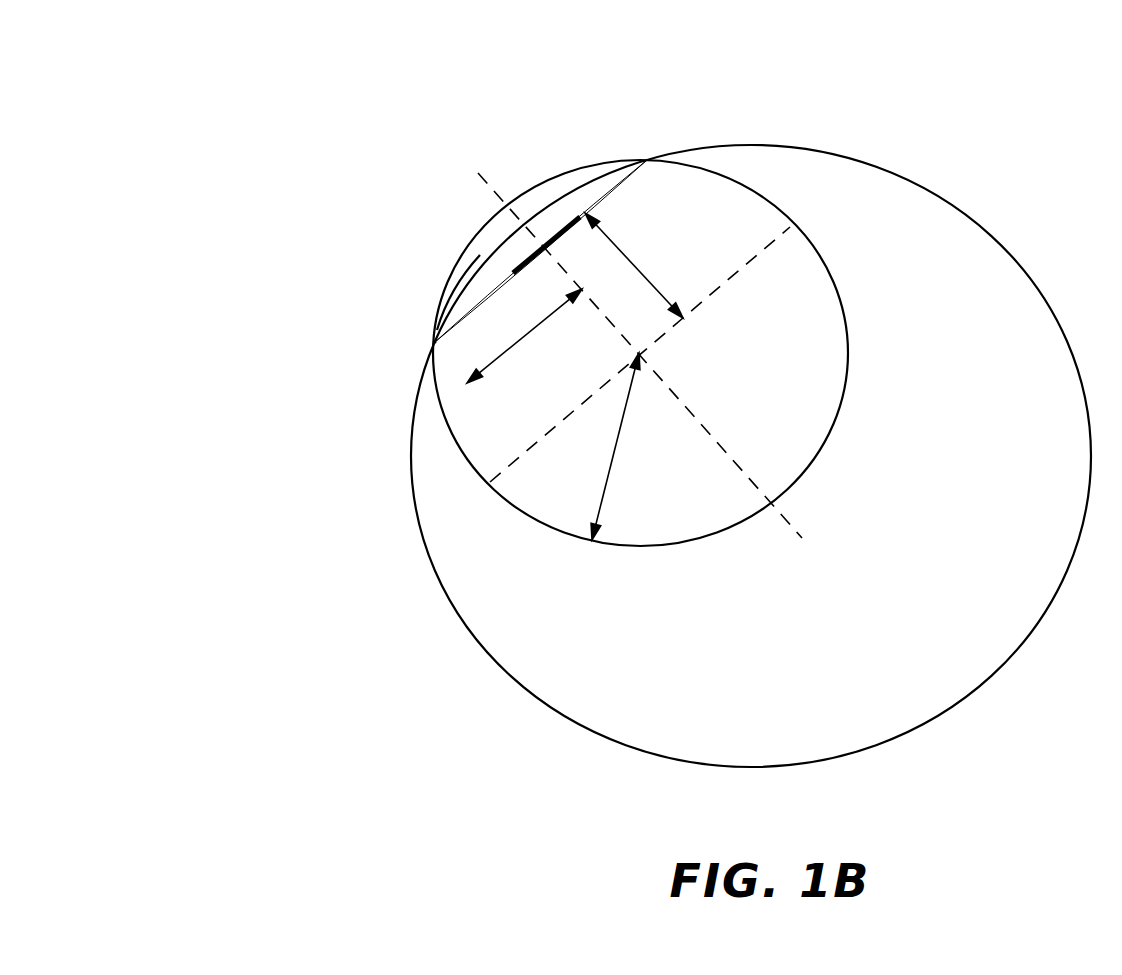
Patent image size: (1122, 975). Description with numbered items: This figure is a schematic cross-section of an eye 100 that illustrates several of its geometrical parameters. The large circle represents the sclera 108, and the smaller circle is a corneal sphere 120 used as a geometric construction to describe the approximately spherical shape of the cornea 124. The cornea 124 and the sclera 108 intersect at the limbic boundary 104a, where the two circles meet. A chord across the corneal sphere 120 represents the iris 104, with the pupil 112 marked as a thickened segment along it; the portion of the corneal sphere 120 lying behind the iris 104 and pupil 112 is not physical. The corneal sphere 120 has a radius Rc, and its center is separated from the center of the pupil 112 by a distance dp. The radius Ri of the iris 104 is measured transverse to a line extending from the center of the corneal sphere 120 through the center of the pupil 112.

The eye 100 is at (276, 112).
The iris 104 is at (622, 165).
The limbic boundary 104a is at (433, 342).
The sclera 108 is at (437, 577).
The pupil 112 is at (562, 224).
The corneal sphere 120 is at (770, 200).
The cornea 124 is at (460, 262).